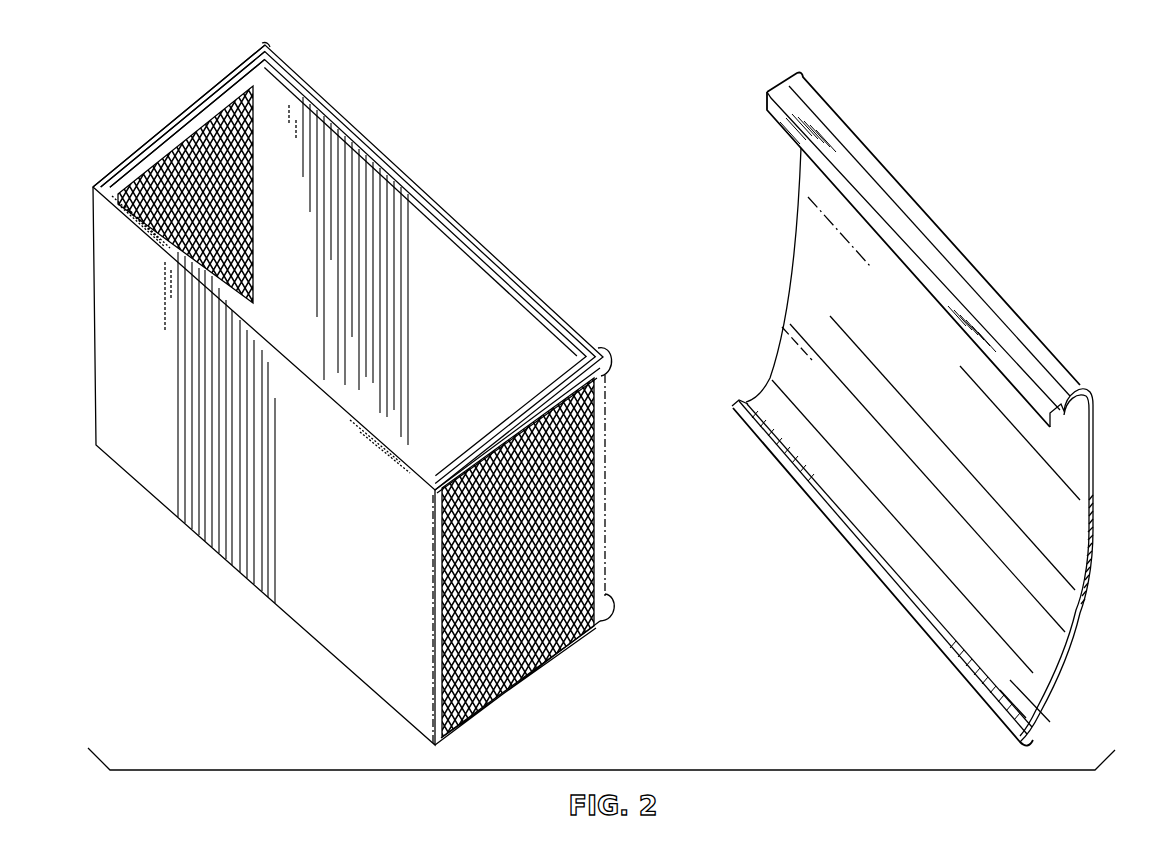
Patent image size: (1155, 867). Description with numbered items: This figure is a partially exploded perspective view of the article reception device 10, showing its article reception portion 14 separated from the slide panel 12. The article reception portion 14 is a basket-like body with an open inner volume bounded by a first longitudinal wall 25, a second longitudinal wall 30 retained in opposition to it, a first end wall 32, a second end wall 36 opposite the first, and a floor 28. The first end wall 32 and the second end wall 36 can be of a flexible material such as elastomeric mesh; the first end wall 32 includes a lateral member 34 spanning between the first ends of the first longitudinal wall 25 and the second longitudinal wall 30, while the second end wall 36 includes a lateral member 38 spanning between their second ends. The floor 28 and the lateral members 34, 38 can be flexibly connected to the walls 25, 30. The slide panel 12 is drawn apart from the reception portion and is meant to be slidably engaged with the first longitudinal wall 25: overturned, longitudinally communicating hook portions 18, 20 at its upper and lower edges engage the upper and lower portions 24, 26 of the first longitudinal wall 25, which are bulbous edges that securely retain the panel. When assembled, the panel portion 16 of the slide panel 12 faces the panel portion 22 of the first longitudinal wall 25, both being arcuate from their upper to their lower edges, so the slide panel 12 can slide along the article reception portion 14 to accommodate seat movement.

The article reception device 10 is at (733, 187).
The slide panel 12 is at (1057, 265).
The article reception portion 14 is at (456, 140).
The panel portion 16 is at (1100, 528).
The hook portion 18 is at (1066, 403).
The hook portion 20 is at (1043, 748).
The panel portion 22 is at (610, 464).
The upper portion 24 is at (612, 352).
The first longitudinal wall 25 is at (428, 295).
The lower portion 26 is at (617, 605).
The floor 28 is at (508, 686).
The second longitudinal wall 30 is at (297, 499).
The first end wall 32 is at (468, 712).
The lateral member 34 is at (518, 414).
The second end wall 36 is at (192, 145).
The lateral member 38 is at (138, 148).